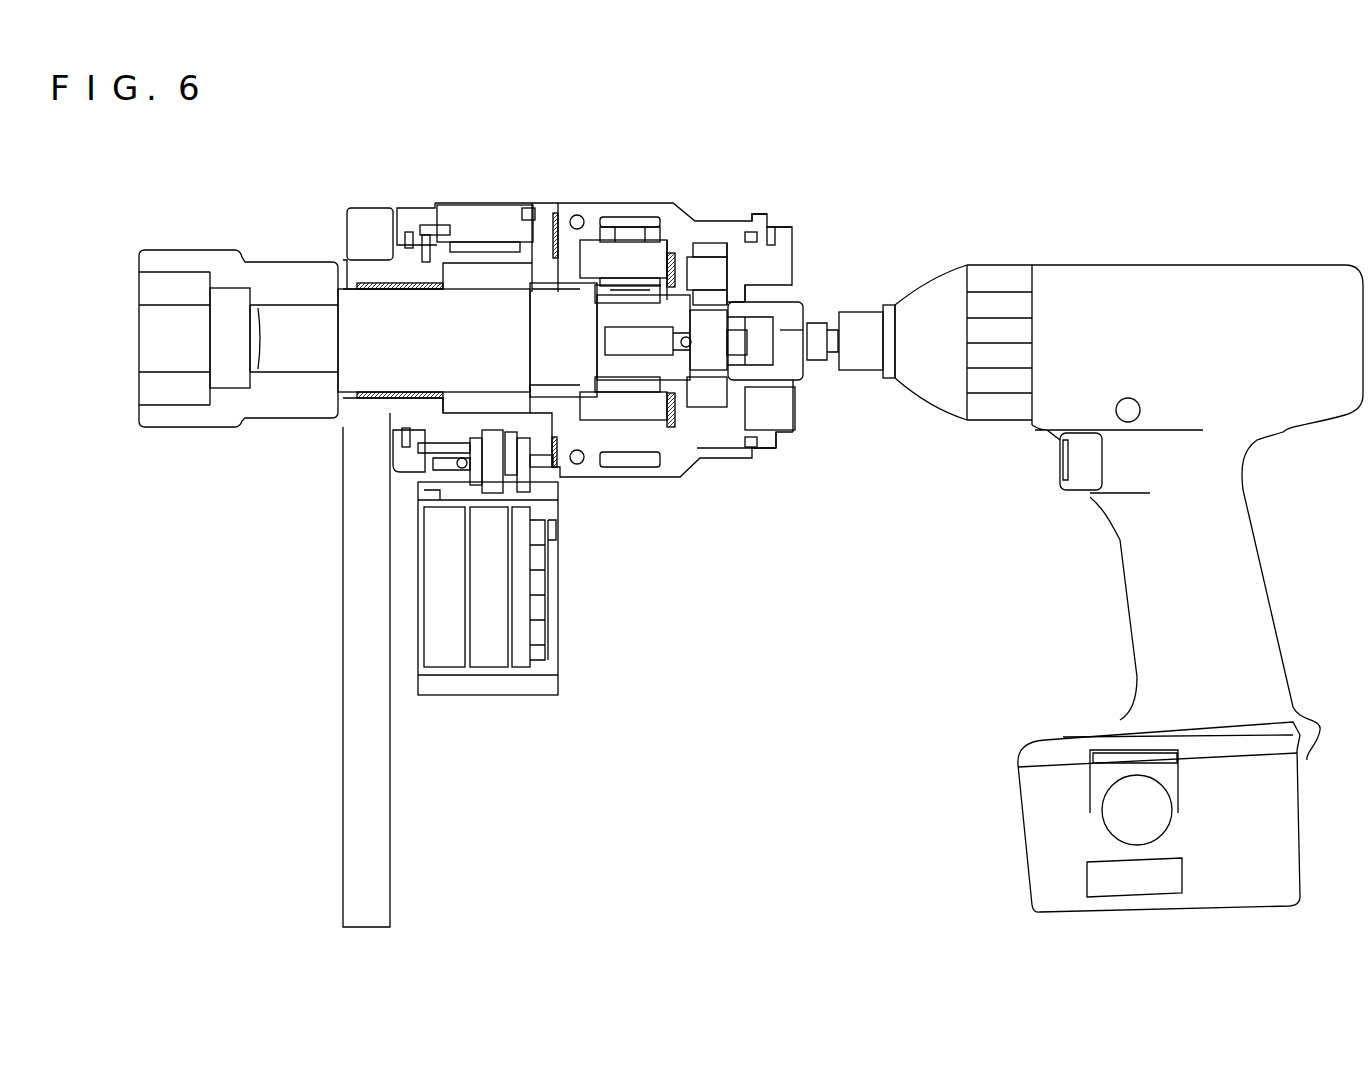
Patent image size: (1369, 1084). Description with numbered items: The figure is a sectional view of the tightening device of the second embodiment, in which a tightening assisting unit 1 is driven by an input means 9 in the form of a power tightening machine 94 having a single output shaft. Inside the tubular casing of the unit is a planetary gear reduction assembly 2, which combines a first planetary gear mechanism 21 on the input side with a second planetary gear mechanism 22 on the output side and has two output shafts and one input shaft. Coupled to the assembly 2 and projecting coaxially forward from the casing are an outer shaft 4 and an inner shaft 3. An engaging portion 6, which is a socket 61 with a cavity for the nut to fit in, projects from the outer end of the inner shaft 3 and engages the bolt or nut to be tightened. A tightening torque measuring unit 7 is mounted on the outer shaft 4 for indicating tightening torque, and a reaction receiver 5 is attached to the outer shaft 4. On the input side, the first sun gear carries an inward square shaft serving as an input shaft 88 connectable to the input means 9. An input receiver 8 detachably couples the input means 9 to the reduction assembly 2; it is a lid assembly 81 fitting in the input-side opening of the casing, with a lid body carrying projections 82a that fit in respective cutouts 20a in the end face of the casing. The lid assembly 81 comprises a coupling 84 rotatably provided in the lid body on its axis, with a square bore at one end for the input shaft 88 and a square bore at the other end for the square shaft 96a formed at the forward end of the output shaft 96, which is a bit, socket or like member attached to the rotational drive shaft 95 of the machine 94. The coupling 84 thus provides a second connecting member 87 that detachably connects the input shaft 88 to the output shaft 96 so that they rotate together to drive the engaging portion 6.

The tightening assisting unit 1 is at (621, 490).
The planetary gear reduction assembly 2 is at (648, 274).
The first planetary gear mechanism 21 is at (713, 226).
The second planetary gear mechanism 22 is at (636, 198).
The cutouts 20a is at (773, 222).
The projections 82a is at (780, 213).
The inner shaft 3 is at (383, 337).
The outer shaft 4 is at (405, 407).
The reaction receiver 5 is at (372, 813).
The engaging portion 6 is at (238, 389).
The socket 61 is at (274, 338).
The tightening torque measuring unit 7 is at (575, 645).
The input receiver 8 is at (831, 387).
The lid assembly 81 is at (736, 293).
The coupling 84 is at (814, 368).
The second connecting member 87 is at (731, 340).
The input shaft 88 is at (720, 355).
The input means 9 is at (1129, 588).
The power tightening machine 94 is at (1008, 457).
The rotational drive shaft 95 is at (870, 300).
The output shaft 96 is at (816, 330).
The square shaft 96a is at (787, 337).